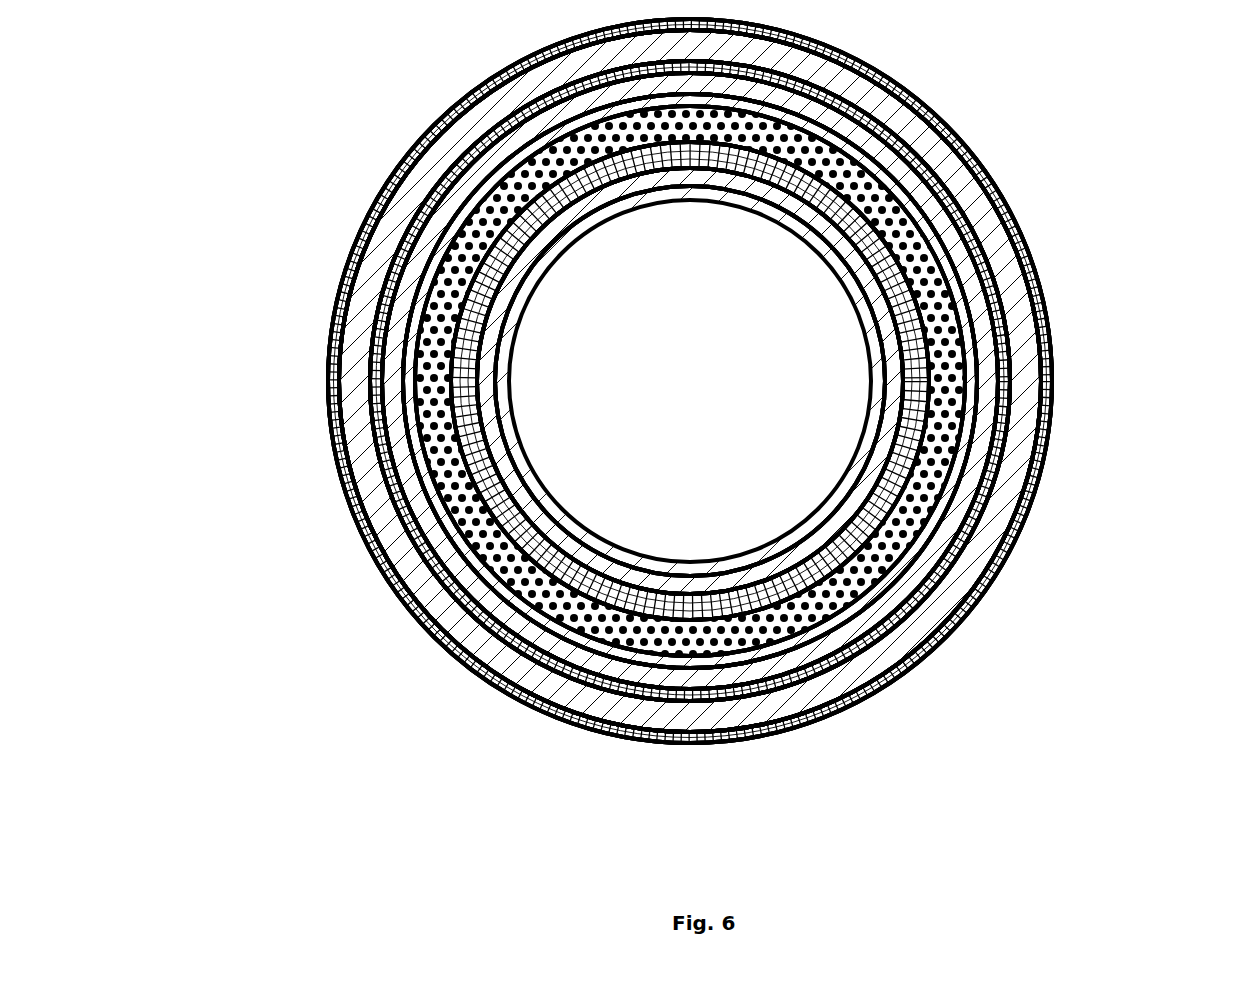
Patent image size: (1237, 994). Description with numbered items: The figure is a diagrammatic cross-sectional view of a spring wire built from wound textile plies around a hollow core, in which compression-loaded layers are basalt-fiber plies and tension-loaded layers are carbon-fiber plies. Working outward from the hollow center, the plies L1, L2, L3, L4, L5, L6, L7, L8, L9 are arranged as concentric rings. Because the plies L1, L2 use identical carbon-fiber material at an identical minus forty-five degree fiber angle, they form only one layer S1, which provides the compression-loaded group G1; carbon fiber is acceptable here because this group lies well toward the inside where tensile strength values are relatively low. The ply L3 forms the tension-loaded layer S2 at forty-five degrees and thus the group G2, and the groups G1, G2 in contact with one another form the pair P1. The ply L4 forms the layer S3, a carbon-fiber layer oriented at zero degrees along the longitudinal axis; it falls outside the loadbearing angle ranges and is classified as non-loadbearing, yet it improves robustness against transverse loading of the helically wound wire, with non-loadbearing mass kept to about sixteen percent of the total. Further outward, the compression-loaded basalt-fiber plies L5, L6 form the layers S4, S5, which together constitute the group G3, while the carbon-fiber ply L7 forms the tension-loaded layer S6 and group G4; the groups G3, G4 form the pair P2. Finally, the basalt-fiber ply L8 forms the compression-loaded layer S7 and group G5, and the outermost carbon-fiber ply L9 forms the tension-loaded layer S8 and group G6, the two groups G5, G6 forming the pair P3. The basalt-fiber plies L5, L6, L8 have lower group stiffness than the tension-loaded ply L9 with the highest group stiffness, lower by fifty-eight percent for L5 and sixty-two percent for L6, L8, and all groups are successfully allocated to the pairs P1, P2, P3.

The group G1 is at (540, 245).
The group G2 is at (480, 297).
The group G3 is at (392, 367).
The group G4 is at (366, 404).
The group G5 is at (360, 460).
The group G6 is at (345, 500).
The layer S1 is at (880, 268).
The layer S2 is at (905, 330).
The layer S3 is at (960, 358).
The layer S4 is at (967, 398).
The layer S5 is at (985, 442).
The layer S6 is at (1003, 470).
The layer S7 is at (1010, 500).
The layer S8 is at (1025, 525).
The ply L1 is at (612, 552).
The ply L2 is at (662, 583).
The ply L3 is at (715, 608).
The ply L4 is at (777, 640).
The ply L5 is at (822, 650).
The ply L6 is at (870, 640).
The ply L7 is at (905, 630).
The ply L8 is at (945, 625).
The ply L9 is at (975, 610).
The pair P1 is at (483, 630).
The pair P2 is at (528, 685).
The pair P3 is at (543, 713).